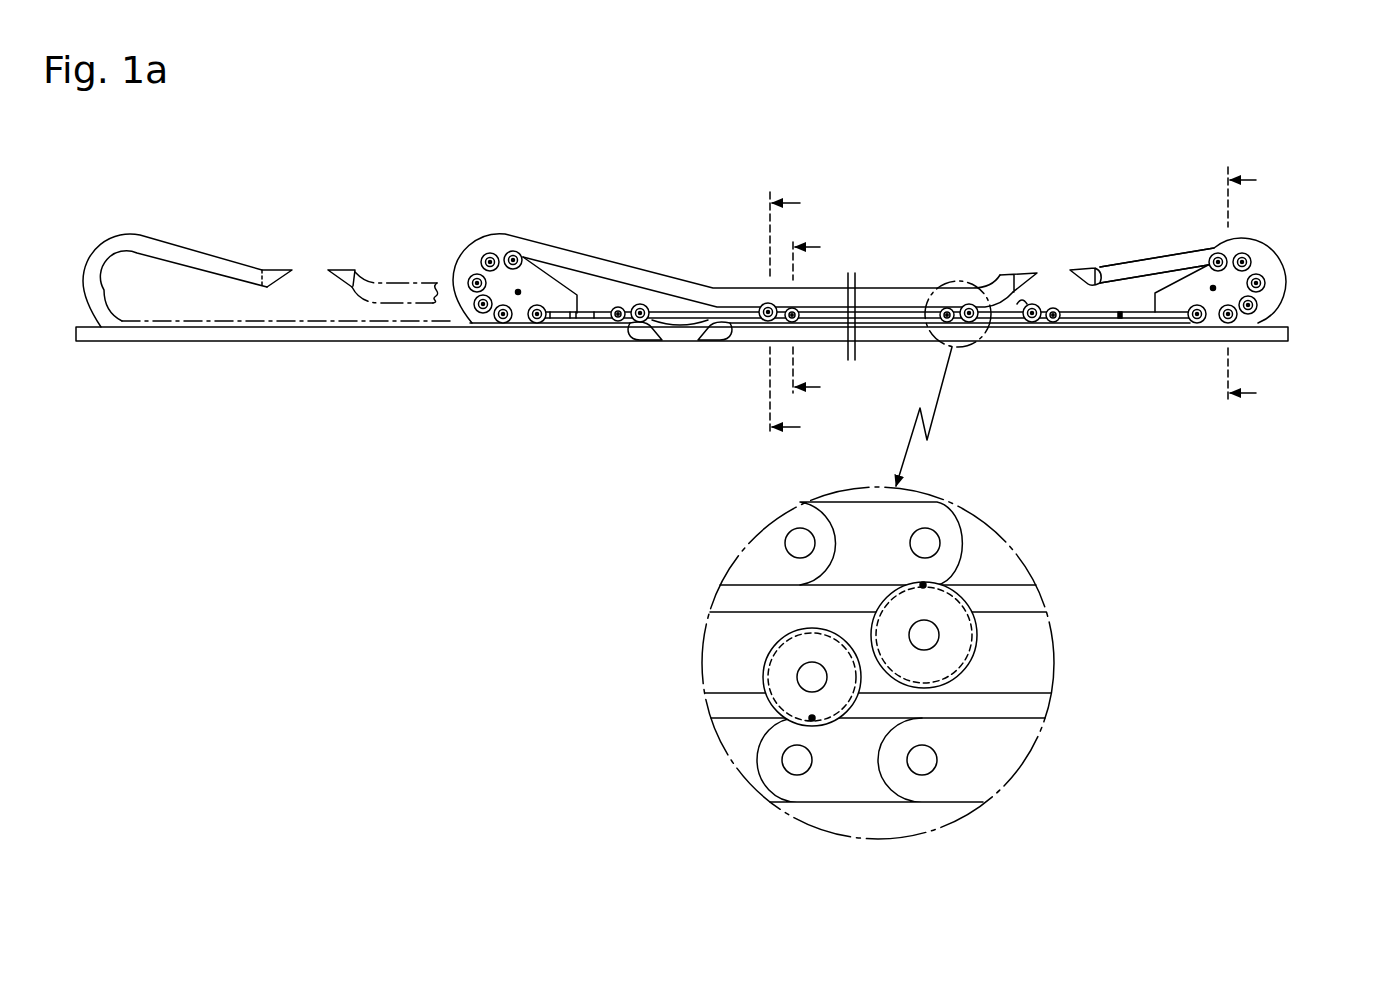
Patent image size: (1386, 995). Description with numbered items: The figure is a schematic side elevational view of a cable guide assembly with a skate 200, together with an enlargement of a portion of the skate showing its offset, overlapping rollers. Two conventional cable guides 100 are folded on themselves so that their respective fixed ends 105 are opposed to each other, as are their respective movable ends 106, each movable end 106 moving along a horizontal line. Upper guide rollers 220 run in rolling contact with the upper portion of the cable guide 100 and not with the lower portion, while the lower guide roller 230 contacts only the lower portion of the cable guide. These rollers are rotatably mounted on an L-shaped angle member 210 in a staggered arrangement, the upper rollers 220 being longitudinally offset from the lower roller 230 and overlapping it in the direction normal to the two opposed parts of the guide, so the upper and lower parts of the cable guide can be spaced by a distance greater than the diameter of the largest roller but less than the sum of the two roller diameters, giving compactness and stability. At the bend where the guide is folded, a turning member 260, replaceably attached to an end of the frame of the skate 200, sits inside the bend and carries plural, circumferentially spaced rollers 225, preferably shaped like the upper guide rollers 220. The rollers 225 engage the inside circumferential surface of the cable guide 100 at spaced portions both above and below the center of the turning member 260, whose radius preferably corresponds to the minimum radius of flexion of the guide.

The cable guide 100 is at (694, 276).
The fixed end 105 is at (645, 343).
The movable end 106 is at (1015, 277).
The skate 200 is at (1103, 331).
The L-shaped angle member 210 is at (1032, 667).
The upper guide roller 220 is at (762, 304).
The rollers 225 is at (1216, 253).
The lower guide roller 230 is at (780, 672).
The turning member 260 is at (1187, 287).